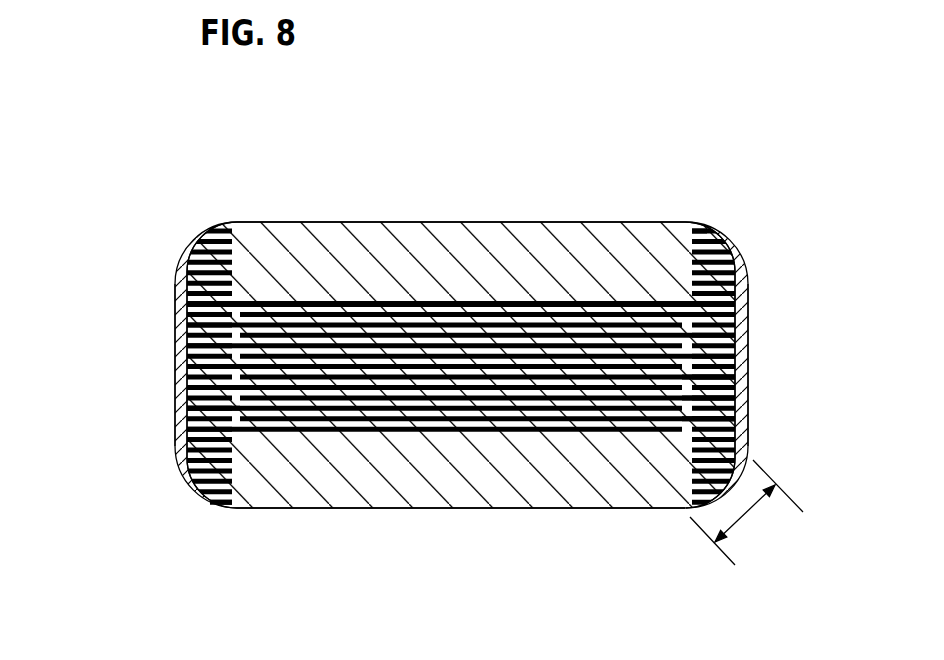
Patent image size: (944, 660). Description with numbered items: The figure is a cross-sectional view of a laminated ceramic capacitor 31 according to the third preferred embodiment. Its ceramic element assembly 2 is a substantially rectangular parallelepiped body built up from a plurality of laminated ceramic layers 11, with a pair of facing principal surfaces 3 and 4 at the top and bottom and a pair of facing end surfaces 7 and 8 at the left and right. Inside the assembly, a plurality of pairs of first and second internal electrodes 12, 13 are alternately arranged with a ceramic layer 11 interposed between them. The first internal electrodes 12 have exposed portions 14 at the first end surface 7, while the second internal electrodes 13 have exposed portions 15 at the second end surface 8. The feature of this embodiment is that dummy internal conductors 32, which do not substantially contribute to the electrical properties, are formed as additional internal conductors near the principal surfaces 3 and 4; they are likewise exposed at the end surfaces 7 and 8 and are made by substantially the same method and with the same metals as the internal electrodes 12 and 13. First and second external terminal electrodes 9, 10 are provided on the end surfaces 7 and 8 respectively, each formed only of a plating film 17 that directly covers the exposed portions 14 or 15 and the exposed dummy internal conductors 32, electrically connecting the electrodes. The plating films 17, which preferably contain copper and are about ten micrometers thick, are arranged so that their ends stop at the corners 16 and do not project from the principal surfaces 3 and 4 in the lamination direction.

The laminated ceramic capacitor 31 is at (132, 126).
The ceramic element assembly 2 is at (540, 222).
The first principal surface 3 is at (460, 222).
The second principal surface 4 is at (480, 509).
The ceramic layer 11 is at (384, 313).
The first internal electrode 12 is at (238, 302).
The second internal electrode 13 is at (687, 302).
The first end surface 7 is at (187, 340).
The second end surface 8 is at (748, 303).
The first external terminal electrode 9 is at (175, 271).
The second external terminal electrode 10 is at (745, 254).
The exposed portion of first internal electrode 14 is at (187, 405).
The exposed portion of second internal electrode 15 is at (735, 415).
The corner 16 is at (742, 515).
The plating film 17 is at (180, 455).
The dummy internal conductor 32 is at (215, 502).